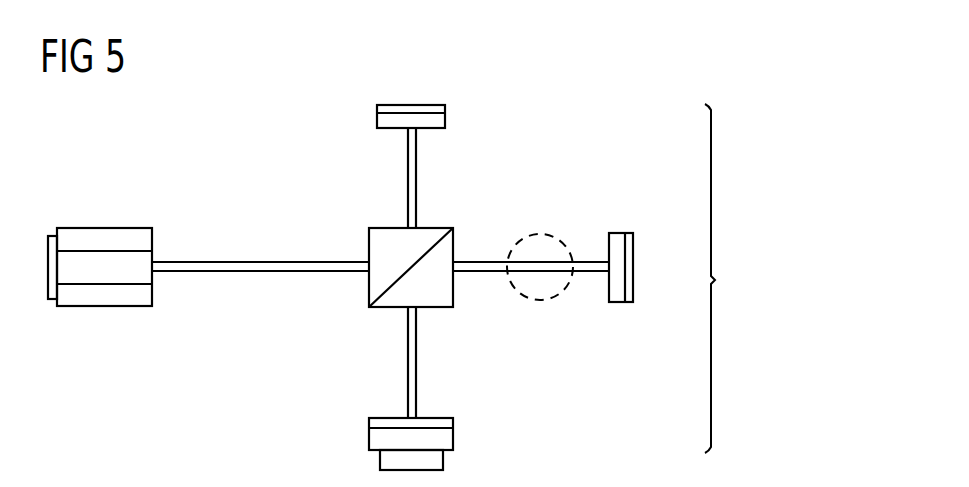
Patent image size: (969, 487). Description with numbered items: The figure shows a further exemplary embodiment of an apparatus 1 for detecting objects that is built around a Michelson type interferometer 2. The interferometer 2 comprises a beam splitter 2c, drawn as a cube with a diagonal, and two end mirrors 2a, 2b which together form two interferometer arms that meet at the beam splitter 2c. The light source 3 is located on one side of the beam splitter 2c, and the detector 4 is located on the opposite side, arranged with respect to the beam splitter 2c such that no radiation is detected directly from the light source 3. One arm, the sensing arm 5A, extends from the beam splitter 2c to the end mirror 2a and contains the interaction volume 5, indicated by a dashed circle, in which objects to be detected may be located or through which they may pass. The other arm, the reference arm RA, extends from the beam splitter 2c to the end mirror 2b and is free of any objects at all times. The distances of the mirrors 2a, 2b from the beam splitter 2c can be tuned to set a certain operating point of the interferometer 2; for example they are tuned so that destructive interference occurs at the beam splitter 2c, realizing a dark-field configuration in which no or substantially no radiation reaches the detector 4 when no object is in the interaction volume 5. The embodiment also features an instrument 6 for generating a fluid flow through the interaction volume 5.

The apparatus 1 is at (73, 183).
The Michelson type interferometer 2 is at (721, 278).
The end mirror 2a is at (633, 266).
The end mirror 2b is at (445, 110).
The beam splitter 2c is at (376, 283).
The light source 3 is at (108, 236).
The detector 4 is at (372, 440).
The interaction volume 5 is at (545, 292).
The sensing arm 5A is at (482, 272).
The instrument for generating a fluid flow 6 is at (565, 240).
The reference arm RA is at (411, 177).